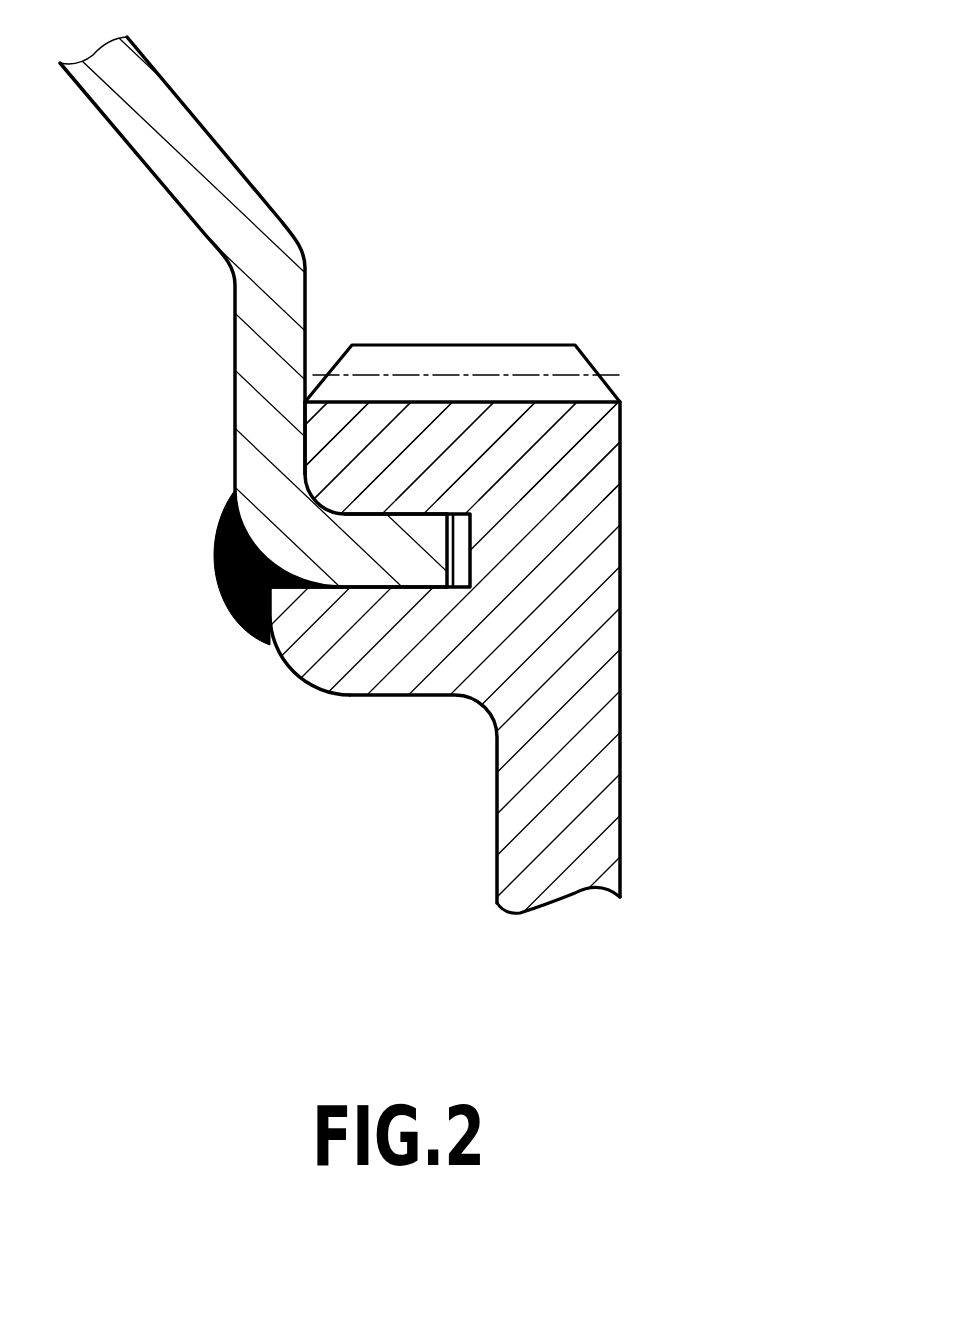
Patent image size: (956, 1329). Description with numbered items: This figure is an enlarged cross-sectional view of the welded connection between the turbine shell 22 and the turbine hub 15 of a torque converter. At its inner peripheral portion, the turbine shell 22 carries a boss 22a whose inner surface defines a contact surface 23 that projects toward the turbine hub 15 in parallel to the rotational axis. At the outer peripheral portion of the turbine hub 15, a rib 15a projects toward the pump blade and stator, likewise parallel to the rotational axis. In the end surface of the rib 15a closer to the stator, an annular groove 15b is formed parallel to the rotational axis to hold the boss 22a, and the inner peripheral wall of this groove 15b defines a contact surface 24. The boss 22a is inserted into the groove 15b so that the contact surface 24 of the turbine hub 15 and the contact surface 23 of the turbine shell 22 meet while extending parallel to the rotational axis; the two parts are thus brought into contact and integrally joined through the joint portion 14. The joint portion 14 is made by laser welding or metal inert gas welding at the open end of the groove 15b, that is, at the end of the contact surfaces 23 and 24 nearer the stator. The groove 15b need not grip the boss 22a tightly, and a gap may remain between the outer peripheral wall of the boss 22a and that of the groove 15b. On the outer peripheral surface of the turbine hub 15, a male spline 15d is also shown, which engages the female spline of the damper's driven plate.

The joint portion 14 is at (223, 607).
The turbine hub 15 is at (550, 823).
The rib 15a is at (295, 658).
The annular groove 15b is at (460, 567).
The male spline 15d is at (519, 358).
The turbine shell 22 is at (162, 143).
The boss 22a is at (367, 542).
The contact surface 23 is at (359, 586).
The contact surface 24 is at (406, 586).